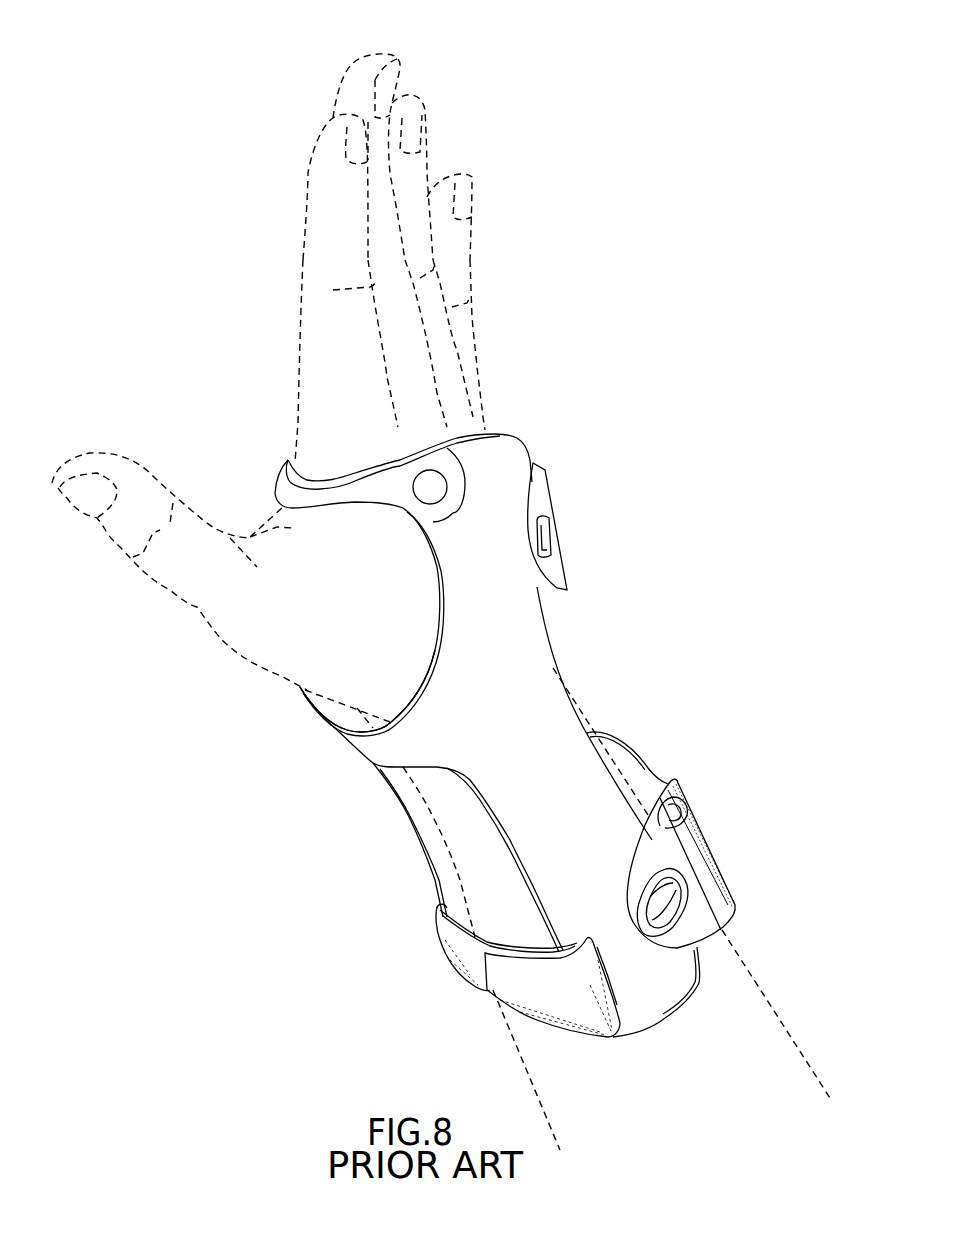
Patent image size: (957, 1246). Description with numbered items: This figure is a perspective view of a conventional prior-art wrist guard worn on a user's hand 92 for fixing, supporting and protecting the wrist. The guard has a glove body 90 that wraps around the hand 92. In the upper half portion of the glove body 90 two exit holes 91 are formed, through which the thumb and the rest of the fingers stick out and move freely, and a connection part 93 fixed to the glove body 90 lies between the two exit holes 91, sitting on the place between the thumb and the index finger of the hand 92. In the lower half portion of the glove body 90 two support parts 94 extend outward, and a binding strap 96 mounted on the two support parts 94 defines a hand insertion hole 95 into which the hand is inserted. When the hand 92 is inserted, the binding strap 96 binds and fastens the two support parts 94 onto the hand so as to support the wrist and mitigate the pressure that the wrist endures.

The glove body 90 is at (490, 747).
The exit holes 91 is at (350, 713).
The hand 92 is at (307, 663).
The connection part 93 is at (285, 485).
The support parts 94 is at (665, 1000).
The hand insertion hole 95 is at (693, 1000).
The binding strap 96 is at (720, 915).